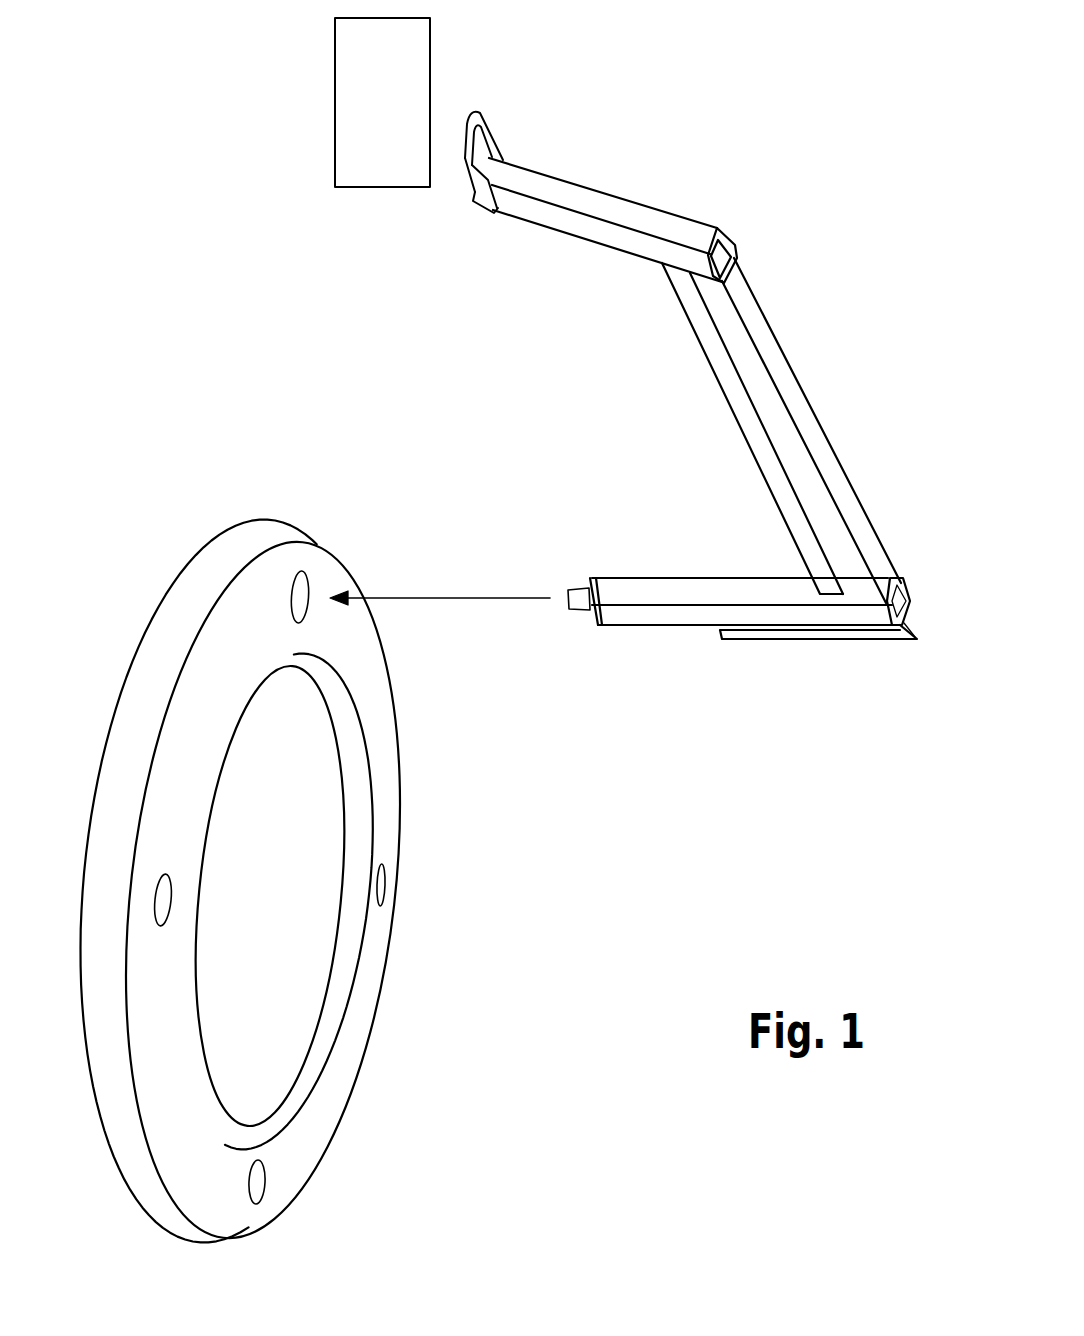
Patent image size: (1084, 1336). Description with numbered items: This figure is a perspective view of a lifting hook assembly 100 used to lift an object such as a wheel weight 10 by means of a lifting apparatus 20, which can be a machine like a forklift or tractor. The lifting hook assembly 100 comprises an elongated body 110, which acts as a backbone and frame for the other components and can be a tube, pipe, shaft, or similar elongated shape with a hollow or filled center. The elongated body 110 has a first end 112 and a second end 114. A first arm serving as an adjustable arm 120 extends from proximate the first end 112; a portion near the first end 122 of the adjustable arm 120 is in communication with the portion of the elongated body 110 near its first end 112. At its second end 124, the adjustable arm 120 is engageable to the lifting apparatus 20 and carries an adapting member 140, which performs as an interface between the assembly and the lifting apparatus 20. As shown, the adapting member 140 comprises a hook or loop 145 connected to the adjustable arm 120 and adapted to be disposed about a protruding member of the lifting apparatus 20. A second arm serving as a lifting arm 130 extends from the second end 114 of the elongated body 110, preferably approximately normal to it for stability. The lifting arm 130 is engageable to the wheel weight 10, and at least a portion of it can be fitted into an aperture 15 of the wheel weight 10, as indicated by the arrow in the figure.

The wheel weight 10 is at (343, 1055).
The aperture 15 is at (305, 590).
The lifting apparatus 20 is at (353, 143).
The lifting hook assembly 100 is at (376, 333).
The elongated body 110 is at (715, 430).
The first end 112 is at (705, 282).
The second end 114 is at (878, 578).
The adjustable arm 120 is at (680, 194).
The first end 122 is at (722, 236).
The second end 124 is at (498, 173).
The lifting arm 130 is at (753, 595).
The adapting member 140 is at (527, 176).
The hook or loop 145 is at (500, 150).